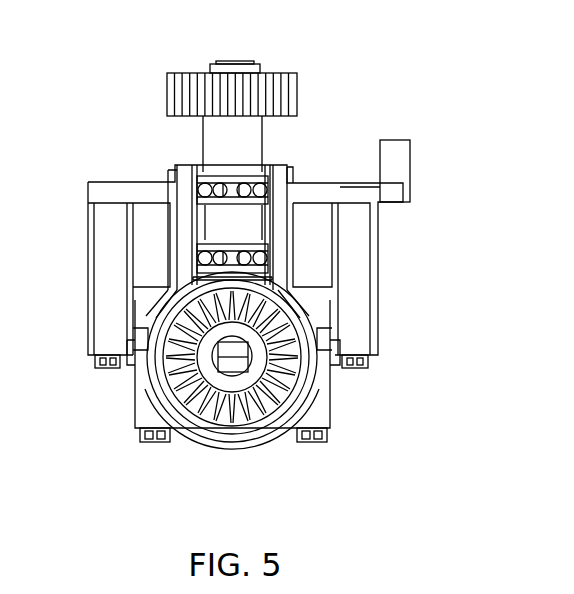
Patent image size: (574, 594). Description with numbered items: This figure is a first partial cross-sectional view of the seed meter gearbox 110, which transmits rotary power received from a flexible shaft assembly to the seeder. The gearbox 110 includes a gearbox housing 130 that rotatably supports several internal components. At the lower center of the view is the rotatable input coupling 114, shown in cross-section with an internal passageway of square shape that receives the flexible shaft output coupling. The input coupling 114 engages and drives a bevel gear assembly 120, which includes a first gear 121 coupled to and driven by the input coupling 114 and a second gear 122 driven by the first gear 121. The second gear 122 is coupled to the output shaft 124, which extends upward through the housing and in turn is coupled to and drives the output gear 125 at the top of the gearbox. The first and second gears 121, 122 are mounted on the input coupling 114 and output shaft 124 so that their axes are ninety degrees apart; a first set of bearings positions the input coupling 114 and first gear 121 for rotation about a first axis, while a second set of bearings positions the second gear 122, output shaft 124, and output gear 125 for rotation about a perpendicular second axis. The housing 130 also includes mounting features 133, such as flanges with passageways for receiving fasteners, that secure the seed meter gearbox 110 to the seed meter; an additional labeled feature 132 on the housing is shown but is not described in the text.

The seed meter gearbox 110 is at (119, 99).
The output gear 125 is at (195, 80).
The output shaft 124 is at (265, 150).
The mounting bracket 132 is at (335, 183).
The mounting features 133 is at (103, 240).
The bevel gear assembly 120 is at (210, 287).
The second gear 122 is at (247, 292).
The first gear 121 is at (300, 387).
The input coupling 114 is at (230, 368).
The gearbox housing 130 is at (280, 430).